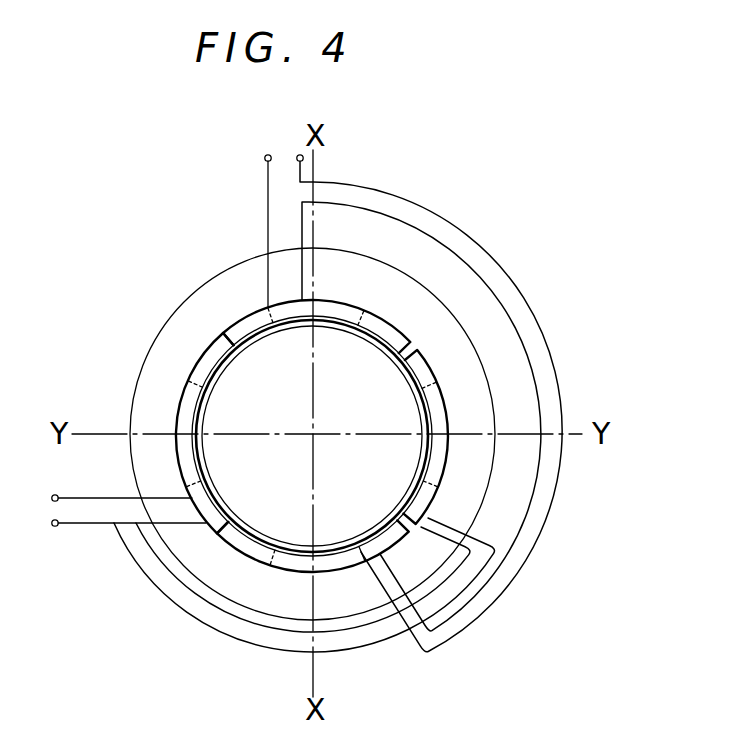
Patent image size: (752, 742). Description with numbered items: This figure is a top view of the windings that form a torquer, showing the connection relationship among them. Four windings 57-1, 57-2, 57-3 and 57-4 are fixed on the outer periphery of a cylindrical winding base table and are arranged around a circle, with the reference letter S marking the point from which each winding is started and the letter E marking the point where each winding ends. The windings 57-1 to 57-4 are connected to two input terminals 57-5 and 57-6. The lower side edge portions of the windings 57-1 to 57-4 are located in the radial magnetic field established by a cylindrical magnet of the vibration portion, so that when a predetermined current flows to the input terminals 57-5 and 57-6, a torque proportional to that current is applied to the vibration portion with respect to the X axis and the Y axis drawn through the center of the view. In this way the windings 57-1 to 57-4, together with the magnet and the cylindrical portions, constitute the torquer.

The winding 57-1 is at (202, 367).
The winding 57-2 is at (359, 300).
The winding 57-3 is at (450, 403).
The winding 57-4 is at (322, 572).
The input terminal 57-5 is at (52, 500).
The input terminal 57-6 is at (297, 155).